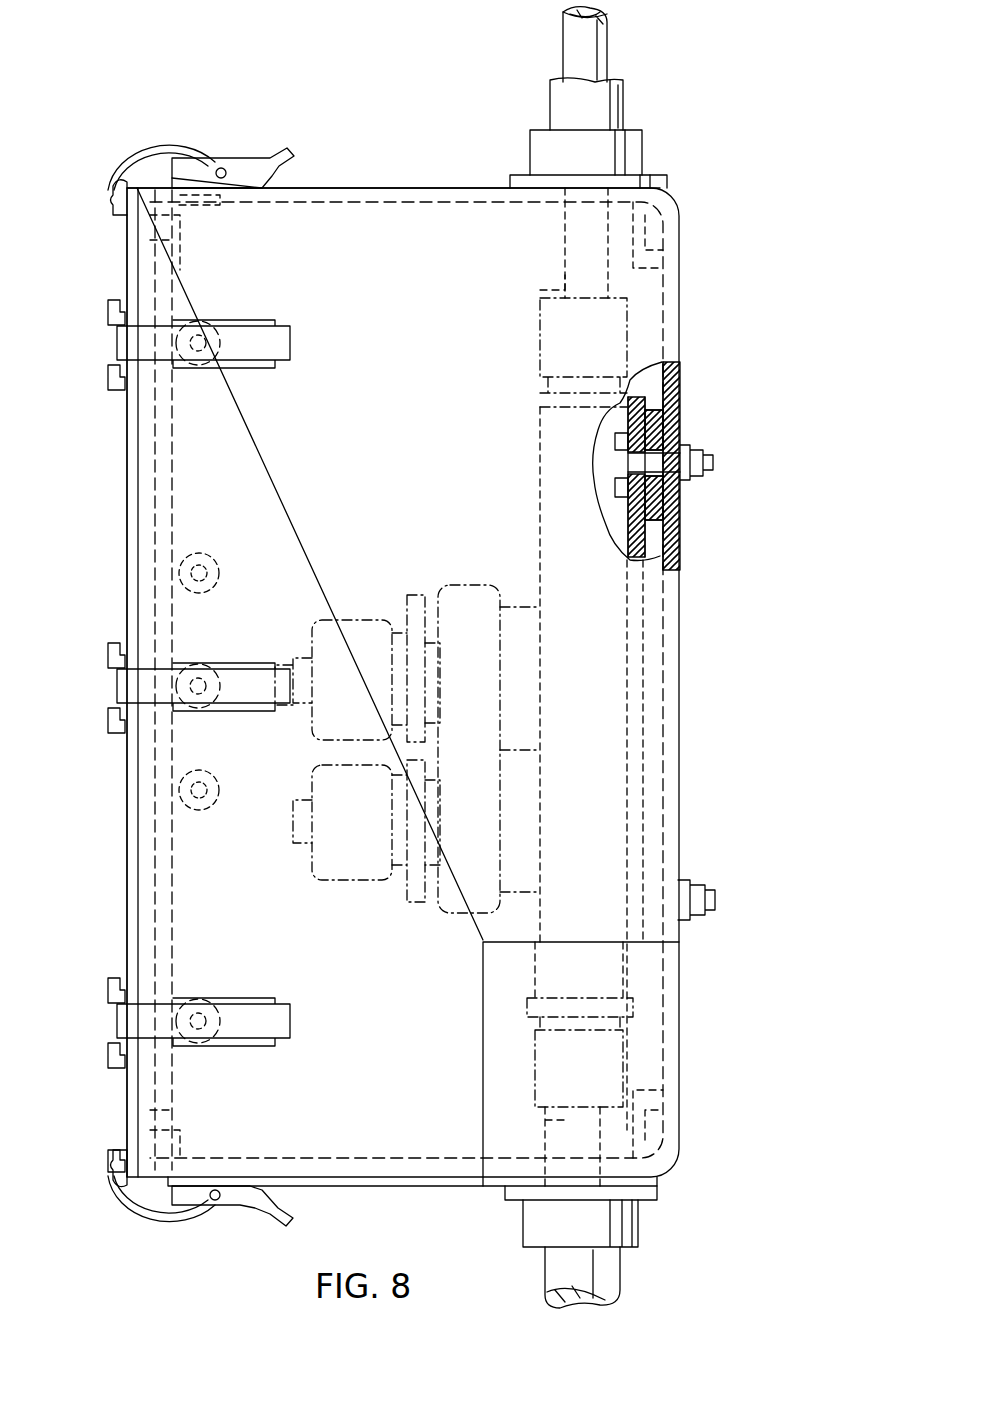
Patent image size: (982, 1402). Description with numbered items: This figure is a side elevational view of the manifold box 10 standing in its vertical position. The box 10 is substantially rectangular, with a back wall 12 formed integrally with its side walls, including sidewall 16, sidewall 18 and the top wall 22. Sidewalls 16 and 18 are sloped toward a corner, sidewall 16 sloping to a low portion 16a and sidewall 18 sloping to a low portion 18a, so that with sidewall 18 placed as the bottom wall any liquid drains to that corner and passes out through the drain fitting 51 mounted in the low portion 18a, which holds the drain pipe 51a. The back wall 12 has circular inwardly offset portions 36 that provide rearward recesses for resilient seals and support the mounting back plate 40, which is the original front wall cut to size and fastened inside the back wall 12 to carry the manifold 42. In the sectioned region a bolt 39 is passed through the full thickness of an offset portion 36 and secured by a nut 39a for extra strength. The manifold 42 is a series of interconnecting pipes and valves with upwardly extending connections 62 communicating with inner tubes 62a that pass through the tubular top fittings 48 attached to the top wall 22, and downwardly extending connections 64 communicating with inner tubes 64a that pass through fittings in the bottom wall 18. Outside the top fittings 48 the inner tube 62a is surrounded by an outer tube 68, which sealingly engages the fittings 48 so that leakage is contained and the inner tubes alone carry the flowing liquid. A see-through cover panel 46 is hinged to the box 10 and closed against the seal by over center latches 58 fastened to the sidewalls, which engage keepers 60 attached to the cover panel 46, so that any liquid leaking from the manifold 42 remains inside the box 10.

The manifold box 10 is at (316, 168).
The back wall 12 is at (679, 700).
The side wall 16 is at (387, 452).
The low portion 16a is at (500, 1047).
The side wall 18 is at (378, 1186).
The low portion 18a is at (497, 1202).
The top wall 22 is at (365, 188).
The offset portion 36 is at (632, 498).
The fastener 39 is at (683, 418).
The nut 39a is at (713, 463).
The mounting back plate 40 is at (648, 527).
The manifold 42 is at (482, 575).
The cover panel 46 is at (128, 490).
The top fitting 48 is at (530, 145).
The drain fitting 51 is at (640, 1222).
The drain pipe 51a is at (620, 1272).
The over center latch 58 is at (236, 158).
The keeper 60 is at (110, 192).
The upwardly extending connection 62 is at (540, 358).
The inner tube 62a is at (563, 55).
The downwardly extending connection 64 is at (535, 1075).
The inner tube 64a is at (565, 1132).
The outer tube 68 is at (550, 100).